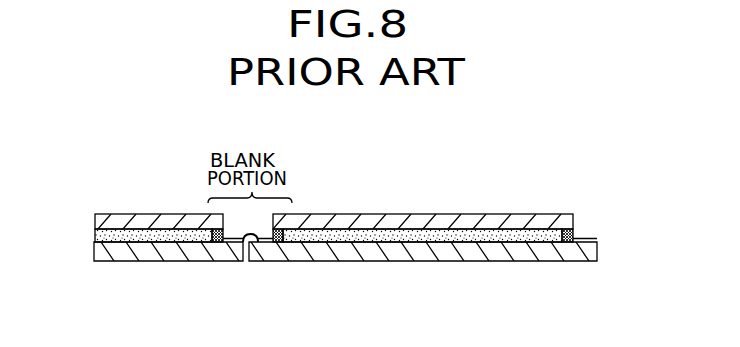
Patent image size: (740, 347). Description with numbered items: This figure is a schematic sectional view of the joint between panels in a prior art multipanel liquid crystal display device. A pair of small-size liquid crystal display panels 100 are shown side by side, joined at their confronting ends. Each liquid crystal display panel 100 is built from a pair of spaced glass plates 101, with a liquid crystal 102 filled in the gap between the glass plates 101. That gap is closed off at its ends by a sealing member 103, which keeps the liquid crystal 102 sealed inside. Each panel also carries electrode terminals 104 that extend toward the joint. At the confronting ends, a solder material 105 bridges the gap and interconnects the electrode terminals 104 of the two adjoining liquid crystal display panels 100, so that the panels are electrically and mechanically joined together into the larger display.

The liquid crystal display panel 100 is at (460, 258).
The glass plate 101 is at (490, 248).
The liquid crystal 102 is at (125, 236).
The sealing member 103 is at (215, 242).
The electrode terminal 104 is at (238, 241).
The solder material 105 is at (247, 245).